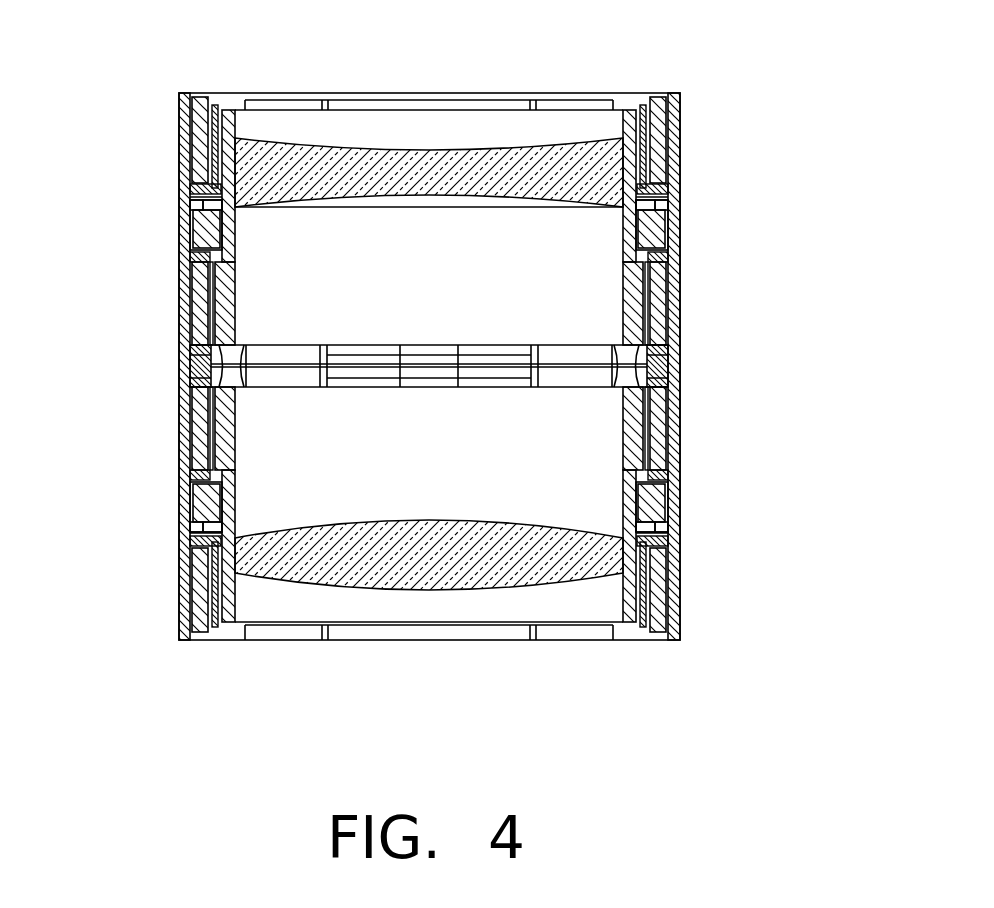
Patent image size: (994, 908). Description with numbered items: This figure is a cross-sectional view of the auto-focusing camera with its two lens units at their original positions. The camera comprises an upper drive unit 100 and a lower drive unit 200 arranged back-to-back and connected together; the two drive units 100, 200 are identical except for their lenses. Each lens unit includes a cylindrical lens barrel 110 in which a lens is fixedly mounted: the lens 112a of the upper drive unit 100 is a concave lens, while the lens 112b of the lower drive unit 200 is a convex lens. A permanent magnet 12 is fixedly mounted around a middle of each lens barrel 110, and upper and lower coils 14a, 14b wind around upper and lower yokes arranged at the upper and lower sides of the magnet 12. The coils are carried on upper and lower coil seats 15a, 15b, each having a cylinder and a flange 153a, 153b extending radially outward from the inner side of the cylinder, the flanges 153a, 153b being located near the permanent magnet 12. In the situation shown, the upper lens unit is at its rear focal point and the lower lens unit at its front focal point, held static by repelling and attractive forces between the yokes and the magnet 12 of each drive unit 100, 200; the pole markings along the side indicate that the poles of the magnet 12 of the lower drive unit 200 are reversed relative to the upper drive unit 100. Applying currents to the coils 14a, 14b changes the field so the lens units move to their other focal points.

The permanent magnet 12 is at (208, 227).
The upper coil 14a is at (192, 124).
The lower coil 14b is at (200, 310).
The upper coil seat 15a is at (215, 97).
The lower coil seat 15b is at (213, 318).
The upper drive unit 100 is at (744, 219).
The lens barrel 110 is at (630, 125).
The lens 112a is at (290, 145).
The lens 112b is at (387, 568).
The flange 153a is at (193, 188).
The flange 153b is at (195, 260).
The lower drive unit 200 is at (746, 503).